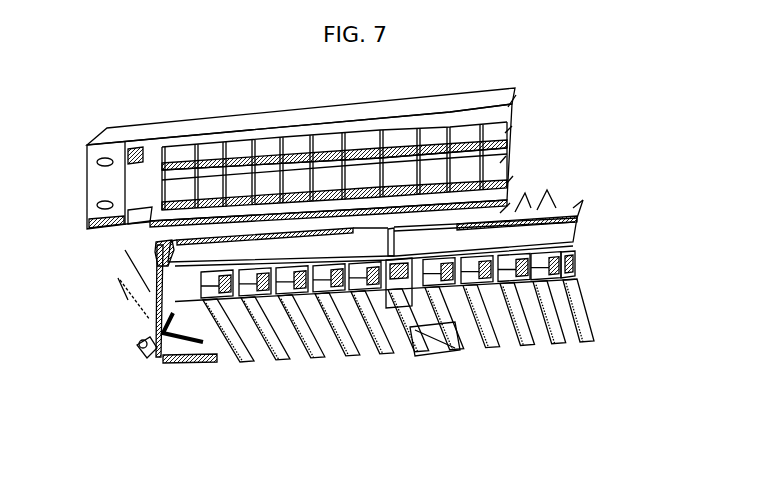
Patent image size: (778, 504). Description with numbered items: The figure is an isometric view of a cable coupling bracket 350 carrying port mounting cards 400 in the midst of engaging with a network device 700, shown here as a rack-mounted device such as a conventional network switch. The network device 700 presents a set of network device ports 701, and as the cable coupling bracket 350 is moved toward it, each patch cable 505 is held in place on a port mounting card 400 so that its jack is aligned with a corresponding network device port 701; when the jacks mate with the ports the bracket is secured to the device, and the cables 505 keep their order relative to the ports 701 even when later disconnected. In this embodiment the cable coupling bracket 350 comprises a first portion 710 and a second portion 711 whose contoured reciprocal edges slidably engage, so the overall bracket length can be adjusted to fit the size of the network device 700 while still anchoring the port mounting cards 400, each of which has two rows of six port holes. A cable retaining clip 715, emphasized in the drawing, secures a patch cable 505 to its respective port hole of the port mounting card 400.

The network device 700 is at (534, 124).
The network device port 701 is at (263, 142).
The first portion 710 is at (587, 224).
The second portion 711 is at (153, 249).
The port mounting card 400 is at (579, 250).
The patch cable 505 is at (609, 316).
The cable coupling bracket 350 is at (137, 369).
The cable retaining clip 715 is at (192, 360).